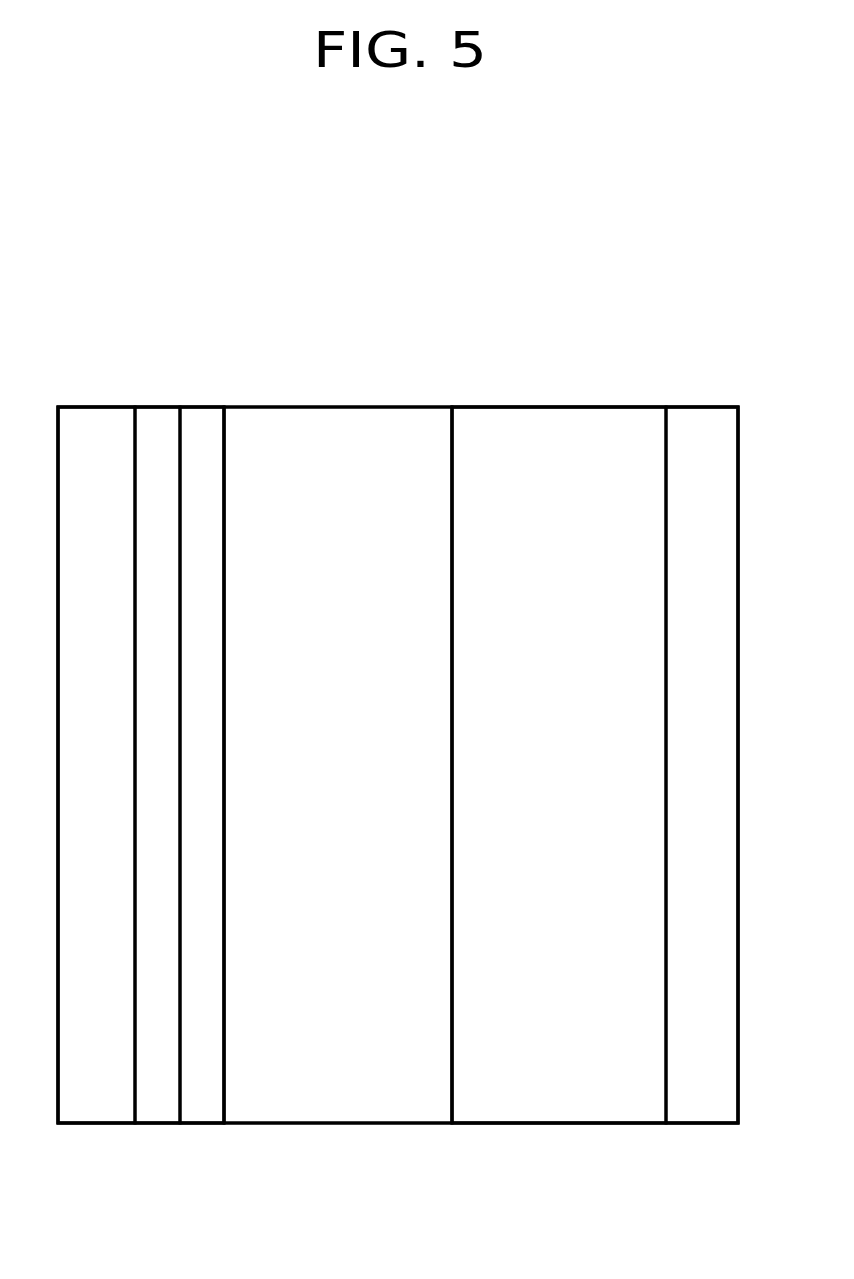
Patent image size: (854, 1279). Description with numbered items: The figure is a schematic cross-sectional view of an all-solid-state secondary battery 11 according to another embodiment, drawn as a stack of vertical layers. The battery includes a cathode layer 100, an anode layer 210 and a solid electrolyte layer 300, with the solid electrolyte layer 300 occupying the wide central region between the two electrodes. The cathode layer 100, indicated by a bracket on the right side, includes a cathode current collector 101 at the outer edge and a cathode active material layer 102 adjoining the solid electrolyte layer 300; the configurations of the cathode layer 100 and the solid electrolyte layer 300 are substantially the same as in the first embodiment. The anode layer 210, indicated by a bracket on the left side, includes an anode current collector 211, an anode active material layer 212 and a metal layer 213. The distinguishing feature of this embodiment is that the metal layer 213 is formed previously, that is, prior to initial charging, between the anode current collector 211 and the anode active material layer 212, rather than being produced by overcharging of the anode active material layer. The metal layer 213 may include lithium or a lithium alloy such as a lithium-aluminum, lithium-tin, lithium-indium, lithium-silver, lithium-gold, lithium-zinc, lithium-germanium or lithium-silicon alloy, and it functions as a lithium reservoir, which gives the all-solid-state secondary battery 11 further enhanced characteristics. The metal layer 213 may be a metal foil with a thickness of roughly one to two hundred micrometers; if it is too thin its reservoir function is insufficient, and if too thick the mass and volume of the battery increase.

The all-solid-state secondary battery 11 is at (468, 314).
The cathode layer 100 is at (717, 335).
The cathode current collector 101 is at (704, 418).
The cathode active material layer 102 is at (574, 418).
The anode layer 210 is at (215, 333).
The anode current collector 211 is at (88, 418).
The anode active material layer 212 is at (209, 418).
The metal layer 213 is at (152, 418).
The solid electrolyte layer 300 is at (331, 418).